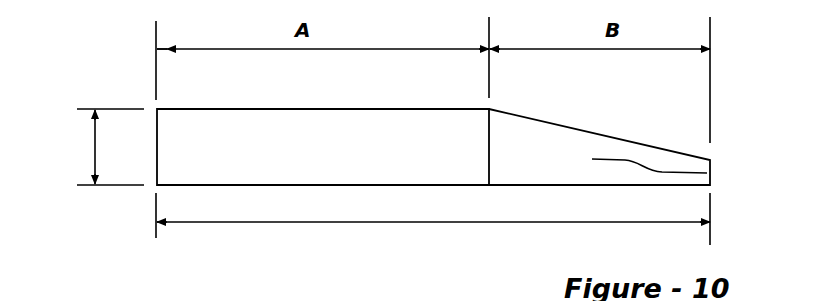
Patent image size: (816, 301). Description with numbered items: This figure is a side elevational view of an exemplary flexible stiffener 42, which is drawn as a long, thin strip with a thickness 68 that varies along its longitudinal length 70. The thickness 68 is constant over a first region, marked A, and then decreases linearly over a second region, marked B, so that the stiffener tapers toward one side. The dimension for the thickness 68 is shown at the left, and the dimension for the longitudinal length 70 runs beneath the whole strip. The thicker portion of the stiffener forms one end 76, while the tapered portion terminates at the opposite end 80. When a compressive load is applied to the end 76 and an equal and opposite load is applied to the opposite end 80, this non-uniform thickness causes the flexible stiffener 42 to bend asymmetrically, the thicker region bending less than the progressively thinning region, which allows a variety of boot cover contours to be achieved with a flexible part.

The flexible stiffener 42 is at (627, 142).
The thickness 68 is at (95, 150).
The longitudinal length 70 is at (284, 223).
The end 76 is at (158, 140).
The opposite end 80 is at (637, 159).